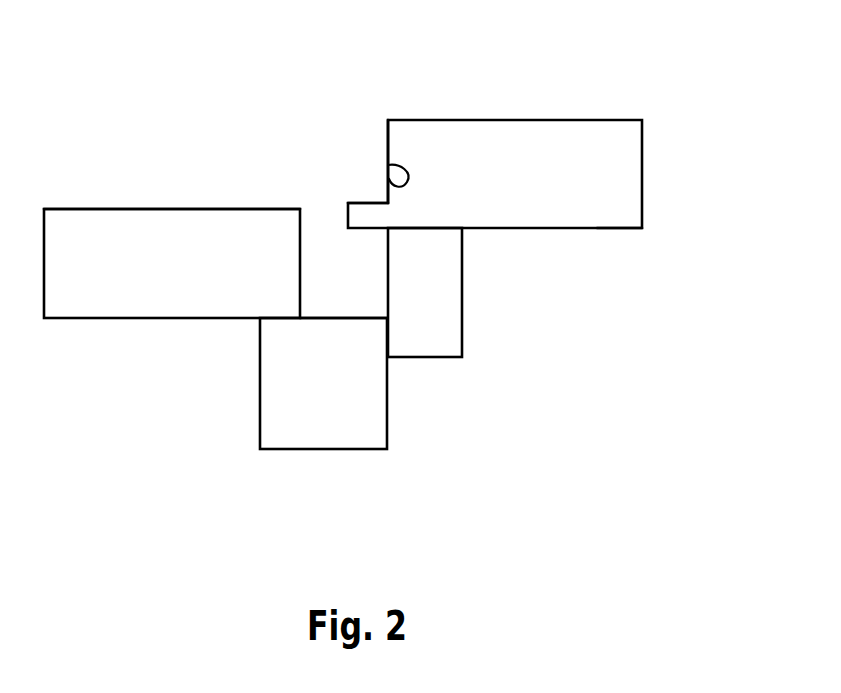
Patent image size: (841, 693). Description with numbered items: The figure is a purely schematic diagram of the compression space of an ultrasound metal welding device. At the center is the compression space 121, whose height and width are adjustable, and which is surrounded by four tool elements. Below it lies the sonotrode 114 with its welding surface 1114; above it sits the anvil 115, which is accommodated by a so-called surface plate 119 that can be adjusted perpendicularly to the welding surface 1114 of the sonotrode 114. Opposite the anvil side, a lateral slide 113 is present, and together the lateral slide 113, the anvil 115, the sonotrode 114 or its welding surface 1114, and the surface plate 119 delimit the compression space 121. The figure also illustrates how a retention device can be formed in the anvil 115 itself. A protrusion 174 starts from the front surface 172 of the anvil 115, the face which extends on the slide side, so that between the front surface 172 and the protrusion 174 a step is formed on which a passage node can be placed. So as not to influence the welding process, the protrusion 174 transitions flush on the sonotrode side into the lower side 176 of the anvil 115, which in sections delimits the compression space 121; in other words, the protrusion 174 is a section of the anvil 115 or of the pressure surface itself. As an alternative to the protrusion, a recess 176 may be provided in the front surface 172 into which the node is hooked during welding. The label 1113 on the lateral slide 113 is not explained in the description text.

The lateral slide 113 is at (162, 293).
The surface of first component 1113 is at (97, 208).
The sonotrode 114 is at (323, 425).
The welding surface 1114 is at (325, 317).
The anvil 115 is at (522, 145).
The surface plate 119 is at (432, 330).
The compression space 121 is at (337, 280).
The front surface 172 is at (387, 147).
The protrusion 174 is at (361, 215).
The lower side 176 is at (388, 173).